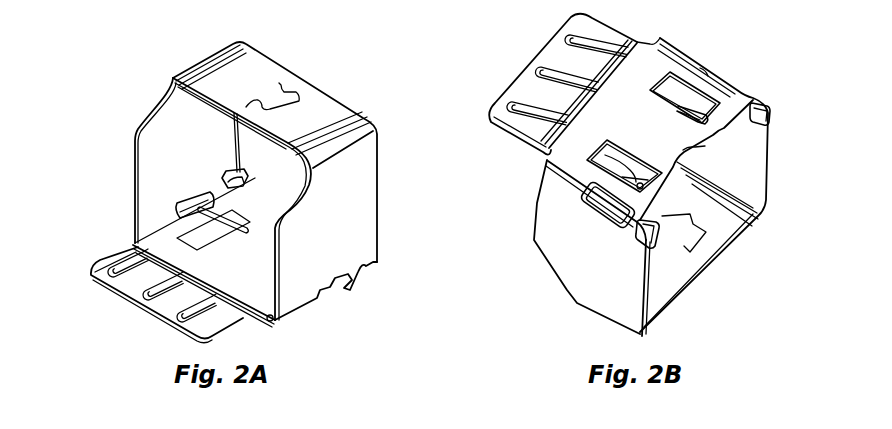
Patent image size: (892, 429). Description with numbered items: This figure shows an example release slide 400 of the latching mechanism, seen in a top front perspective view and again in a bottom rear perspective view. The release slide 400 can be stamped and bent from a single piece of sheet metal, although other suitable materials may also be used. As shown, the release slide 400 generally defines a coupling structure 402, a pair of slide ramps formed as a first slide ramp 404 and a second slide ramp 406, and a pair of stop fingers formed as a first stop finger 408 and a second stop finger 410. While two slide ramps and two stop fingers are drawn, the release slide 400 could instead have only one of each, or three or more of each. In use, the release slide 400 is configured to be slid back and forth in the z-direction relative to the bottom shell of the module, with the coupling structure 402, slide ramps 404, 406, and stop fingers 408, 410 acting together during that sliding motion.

In FIG. 2A, the release slide 400 is at (108, 87).
In FIG. 2B, the release slide 400 is at (500, 75).
In FIG. 2A, the coupling structure 402 is at (120, 284).
In FIG. 2B, the coupling structure 402 is at (552, 45).
In FIG. 2A, the first slide ramp 404 is at (217, 208).
In FIG. 2B, the first slide ramp 404 is at (587, 161).
In FIG. 2B, the second slide ramp 406 is at (698, 107).
In FIG. 2A, the first stop finger 408 is at (242, 172).
In FIG. 2B, the first stop finger 408 is at (664, 222).
In FIG. 2B, the second stop finger 410 is at (771, 110).